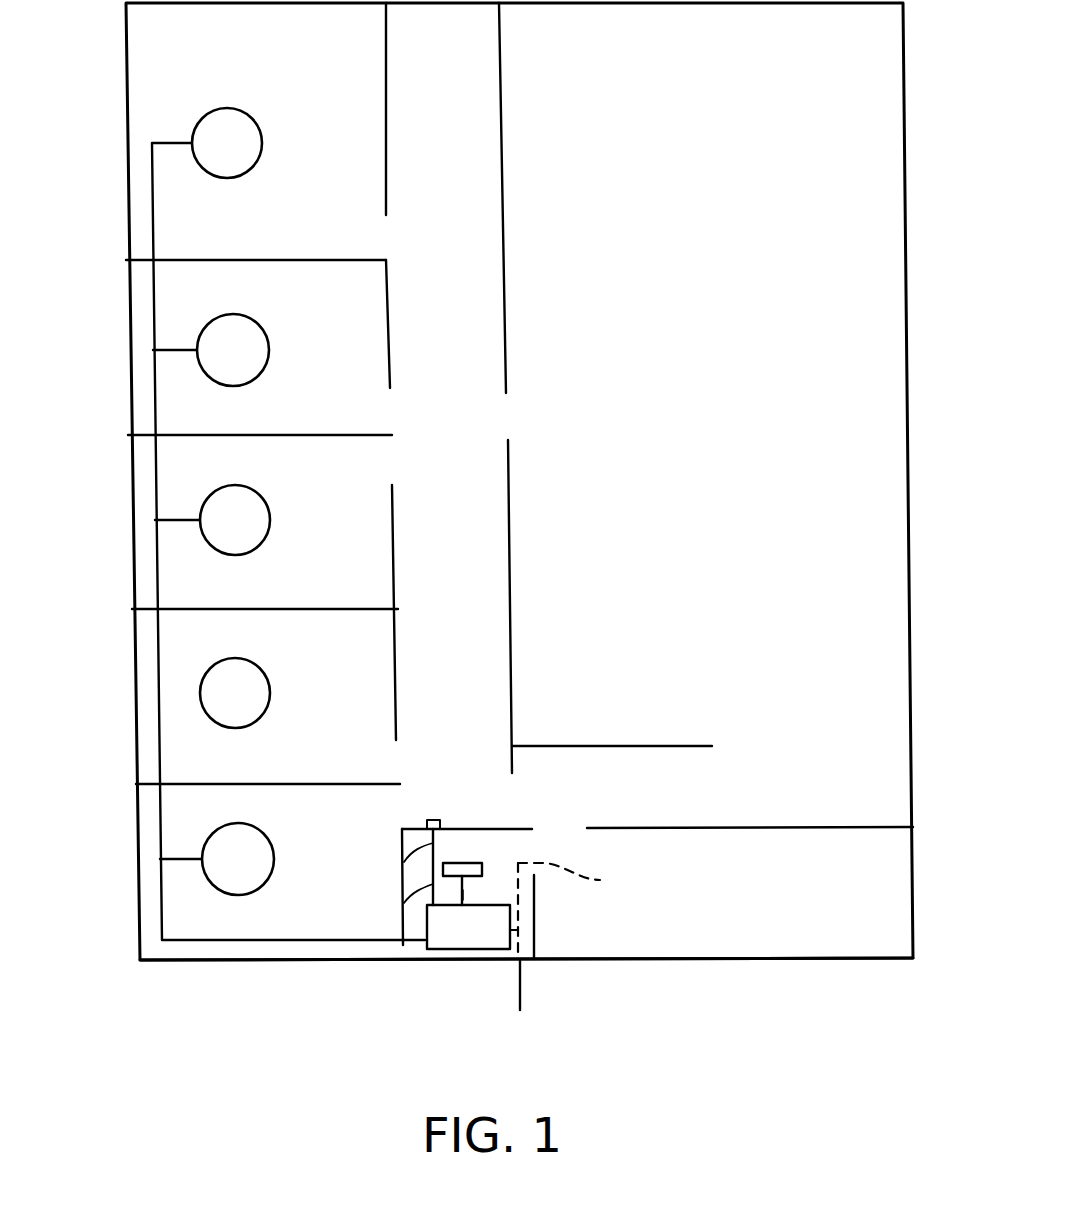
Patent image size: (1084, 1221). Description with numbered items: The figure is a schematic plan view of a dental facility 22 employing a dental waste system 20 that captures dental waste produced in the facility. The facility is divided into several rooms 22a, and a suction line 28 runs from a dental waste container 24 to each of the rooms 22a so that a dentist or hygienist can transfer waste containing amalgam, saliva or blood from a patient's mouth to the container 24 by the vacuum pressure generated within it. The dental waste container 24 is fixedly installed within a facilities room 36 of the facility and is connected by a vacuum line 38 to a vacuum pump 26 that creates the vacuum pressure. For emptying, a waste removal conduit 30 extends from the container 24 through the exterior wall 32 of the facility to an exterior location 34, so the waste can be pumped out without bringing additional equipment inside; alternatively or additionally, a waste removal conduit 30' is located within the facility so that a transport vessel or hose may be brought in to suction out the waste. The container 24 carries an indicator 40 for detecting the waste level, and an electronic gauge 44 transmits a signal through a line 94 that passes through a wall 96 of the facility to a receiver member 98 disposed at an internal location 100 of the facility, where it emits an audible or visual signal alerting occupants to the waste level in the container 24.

The dental waste system 20 is at (440, 1012).
The dental facility 22 is at (712, 366).
The rooms 22a is at (352, 73).
The dental waste container 24 is at (475, 930).
The vacuum pump 26 is at (466, 862).
The suction line 28 is at (153, 208).
The waste removal conduit 30 is at (562, 985).
The waste removal conduit 30' is at (579, 907).
The exterior wall 32 is at (612, 960).
The exterior location 34 is at (572, 1054).
The facilities room 36 is at (537, 903).
The vacuum line 38 is at (465, 890).
The indicator 40 is at (440, 850).
The electronic gauge 44 is at (404, 860).
The line 94 is at (404, 900).
The wall 96 is at (513, 829).
The receiver member 98 is at (432, 820).
The internal location 100 is at (486, 730).